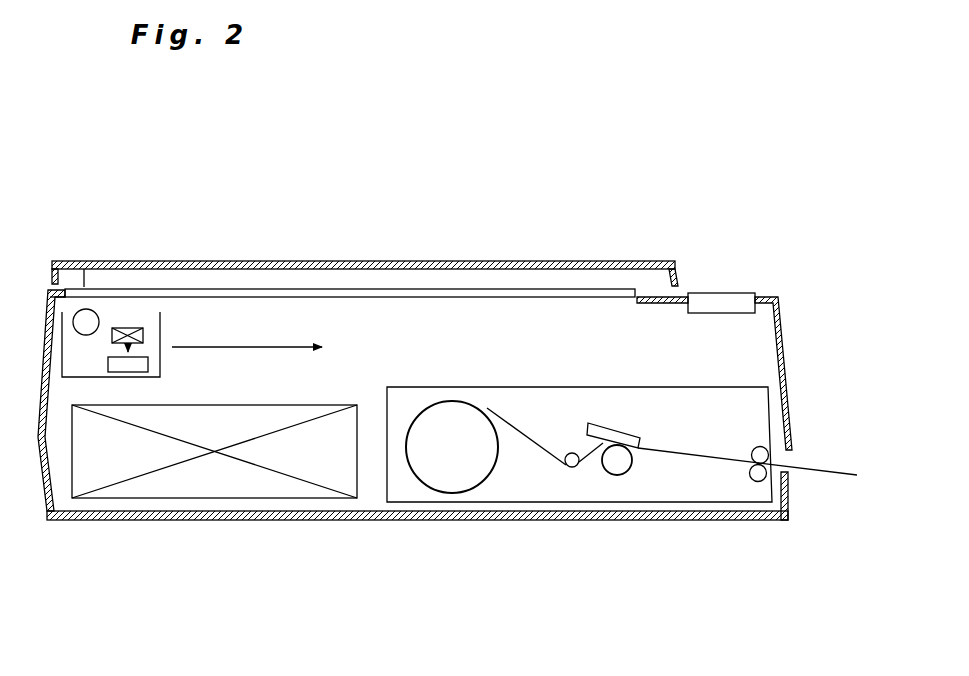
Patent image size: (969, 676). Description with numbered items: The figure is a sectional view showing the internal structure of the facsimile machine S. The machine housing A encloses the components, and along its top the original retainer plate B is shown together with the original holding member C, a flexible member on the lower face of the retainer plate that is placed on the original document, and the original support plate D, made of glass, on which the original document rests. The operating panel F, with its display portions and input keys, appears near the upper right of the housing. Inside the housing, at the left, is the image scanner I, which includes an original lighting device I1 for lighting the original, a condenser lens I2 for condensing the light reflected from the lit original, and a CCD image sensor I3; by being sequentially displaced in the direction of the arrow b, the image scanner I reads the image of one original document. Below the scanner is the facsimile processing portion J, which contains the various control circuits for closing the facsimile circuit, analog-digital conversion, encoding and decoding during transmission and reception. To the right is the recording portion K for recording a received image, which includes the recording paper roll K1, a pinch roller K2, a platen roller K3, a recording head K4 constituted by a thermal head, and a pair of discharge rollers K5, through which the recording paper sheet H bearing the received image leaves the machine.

The facsimile machine S is at (440, 160).
The machine housing A is at (287, 521).
The original retainer plate B is at (353, 262).
The original holding member C is at (538, 267).
The original support plate D is at (253, 291).
The operating panel F is at (727, 296).
The image scanner I is at (80, 360).
The original lighting device I1 is at (90, 318).
The condenser lens I2 is at (132, 328).
The CCD image sensor I3 is at (137, 365).
The arrow b is at (247, 330).
The facsimile processing portion J is at (190, 485).
The recording portion K is at (534, 492).
The recording paper roll K1 is at (447, 475).
The pinch roller K2 is at (571, 453).
The platen roller K3 is at (617, 474).
The recording head K4 is at (618, 433).
The pair of discharge rollers K5 is at (767, 452).
The recording paper sheet H is at (832, 470).